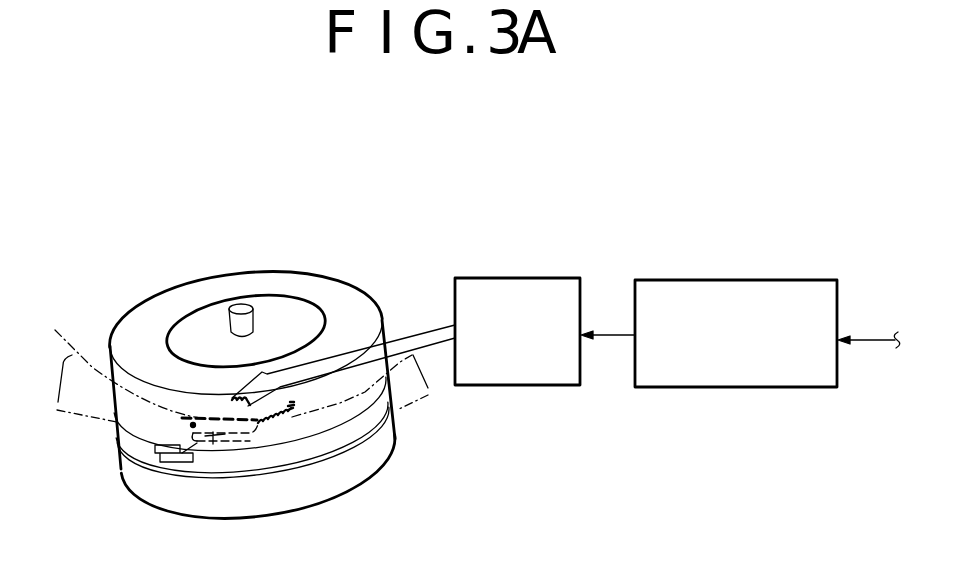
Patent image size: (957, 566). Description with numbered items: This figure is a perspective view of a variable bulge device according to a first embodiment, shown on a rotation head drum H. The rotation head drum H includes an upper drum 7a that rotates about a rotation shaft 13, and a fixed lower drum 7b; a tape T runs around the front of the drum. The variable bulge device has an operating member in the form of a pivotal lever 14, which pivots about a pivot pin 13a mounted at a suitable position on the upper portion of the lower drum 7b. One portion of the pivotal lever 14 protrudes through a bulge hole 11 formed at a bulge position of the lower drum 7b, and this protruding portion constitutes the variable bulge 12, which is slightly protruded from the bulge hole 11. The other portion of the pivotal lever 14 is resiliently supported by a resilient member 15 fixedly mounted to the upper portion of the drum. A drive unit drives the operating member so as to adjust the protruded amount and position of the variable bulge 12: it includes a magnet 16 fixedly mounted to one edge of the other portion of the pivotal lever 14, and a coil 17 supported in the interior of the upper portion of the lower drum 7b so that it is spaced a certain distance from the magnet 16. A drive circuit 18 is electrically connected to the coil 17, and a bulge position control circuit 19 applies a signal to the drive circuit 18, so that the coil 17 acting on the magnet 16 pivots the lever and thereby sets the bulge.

The rotation head drum H is at (173, 300).
The upper drum 7a is at (357, 302).
The lower drum 7b is at (235, 496).
The rotation shaft 13 is at (237, 303).
The pivot pin 13a is at (193, 425).
The coil 17 is at (233, 402).
The magnetic tape T is at (231, 369).
The resilient member 15 is at (267, 423).
The magnet 16 is at (232, 425).
The pivotal lever 14 is at (213, 437).
The variable bulge 12 is at (163, 457).
The bulge hole 11 is at (192, 428).
The drive circuit 18 is at (520, 283).
The bulge position control circuit 19 is at (729, 286).